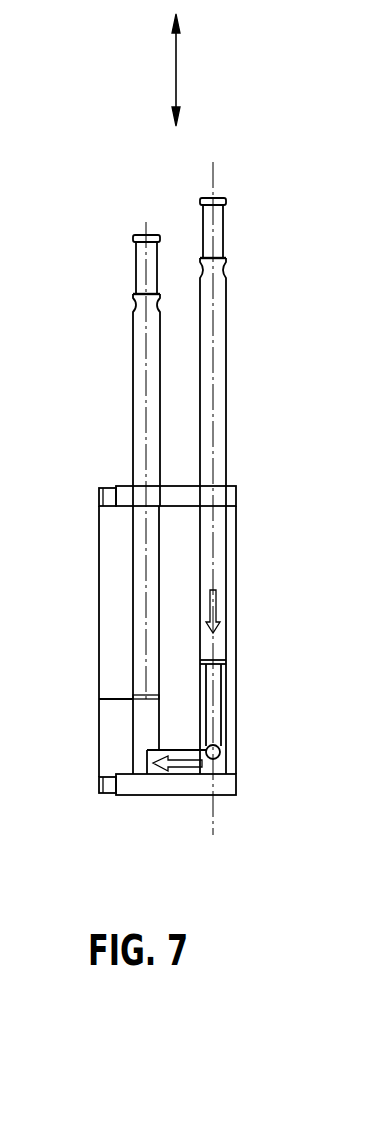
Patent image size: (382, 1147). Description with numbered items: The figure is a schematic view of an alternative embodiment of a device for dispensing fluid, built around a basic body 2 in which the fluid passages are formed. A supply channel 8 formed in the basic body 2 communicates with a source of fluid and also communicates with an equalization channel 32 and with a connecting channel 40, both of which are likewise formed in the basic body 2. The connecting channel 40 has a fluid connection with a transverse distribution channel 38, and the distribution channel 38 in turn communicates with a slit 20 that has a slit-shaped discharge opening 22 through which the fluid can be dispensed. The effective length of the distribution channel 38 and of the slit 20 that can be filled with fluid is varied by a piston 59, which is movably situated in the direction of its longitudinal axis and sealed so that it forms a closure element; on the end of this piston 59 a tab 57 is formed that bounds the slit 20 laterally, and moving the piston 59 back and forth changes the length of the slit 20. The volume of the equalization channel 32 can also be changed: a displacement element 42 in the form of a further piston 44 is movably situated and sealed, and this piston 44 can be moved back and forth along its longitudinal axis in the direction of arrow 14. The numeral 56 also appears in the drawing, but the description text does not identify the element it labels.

The basic body 2 is at (143, 822).
The supply channel 8 is at (221, 752).
The arrow 14 is at (176, 72).
The slit 20 is at (110, 757).
The discharge opening 22 is at (93, 697).
The equalization channel 32 is at (215, 712).
The distribution channel 38 is at (138, 767).
The connecting channel 40 is at (152, 767).
The displacement element 42 is at (227, 541).
The piston 44 is at (218, 652).
The spring 56 is at (136, 630).
The tab 57 is at (112, 676).
The piston 59 is at (137, 553).